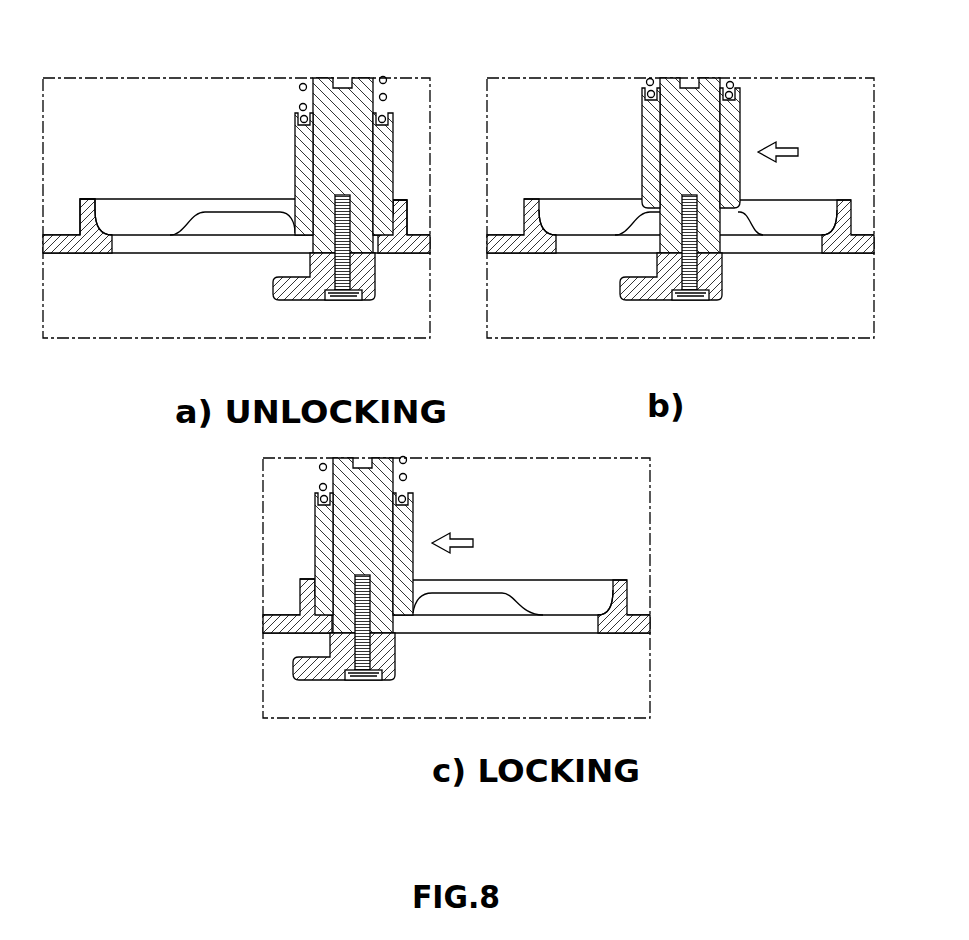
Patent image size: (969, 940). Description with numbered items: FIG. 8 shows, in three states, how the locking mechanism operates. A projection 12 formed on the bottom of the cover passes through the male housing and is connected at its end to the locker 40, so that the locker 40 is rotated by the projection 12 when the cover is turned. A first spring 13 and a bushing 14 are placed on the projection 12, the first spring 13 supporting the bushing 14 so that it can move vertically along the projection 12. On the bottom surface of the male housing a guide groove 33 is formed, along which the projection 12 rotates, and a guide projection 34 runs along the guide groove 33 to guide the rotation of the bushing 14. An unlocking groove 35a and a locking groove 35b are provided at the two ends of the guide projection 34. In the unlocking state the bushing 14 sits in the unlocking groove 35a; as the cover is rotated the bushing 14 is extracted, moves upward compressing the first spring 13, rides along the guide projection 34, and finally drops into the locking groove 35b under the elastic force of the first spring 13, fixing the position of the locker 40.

The projection 12 is at (343, 107).
The first spring 13 is at (300, 78).
The bushing 14 is at (294, 157).
The guide groove 33 is at (240, 243).
The guide projection 34 is at (158, 199).
The unlocking groove 35a is at (385, 200).
The locking groove 35b is at (105, 199).
The locker 40 is at (305, 300).